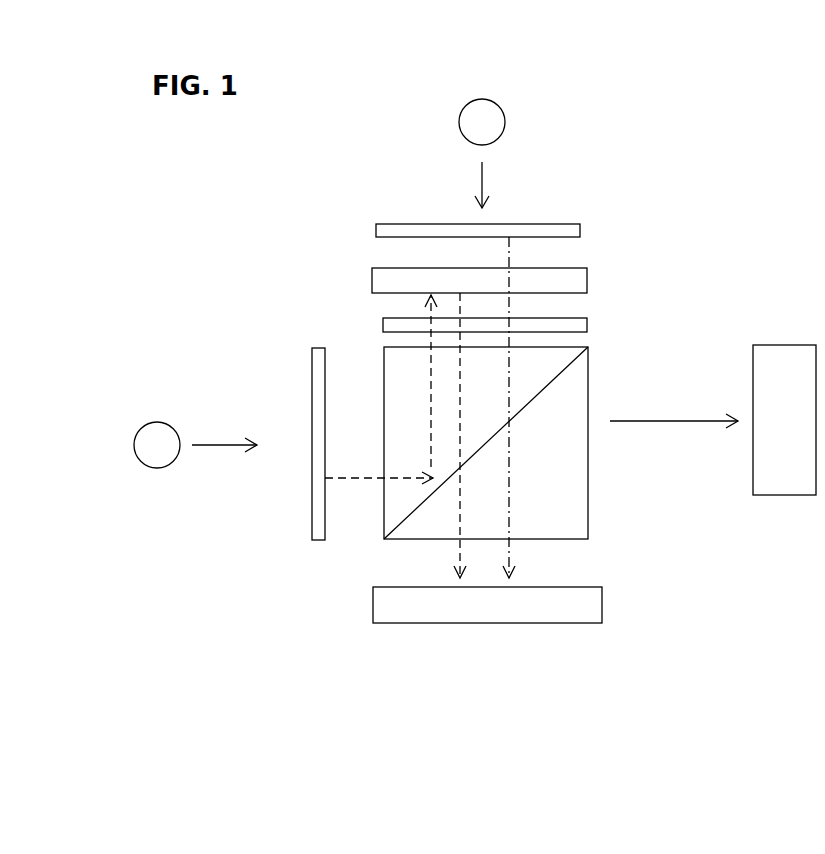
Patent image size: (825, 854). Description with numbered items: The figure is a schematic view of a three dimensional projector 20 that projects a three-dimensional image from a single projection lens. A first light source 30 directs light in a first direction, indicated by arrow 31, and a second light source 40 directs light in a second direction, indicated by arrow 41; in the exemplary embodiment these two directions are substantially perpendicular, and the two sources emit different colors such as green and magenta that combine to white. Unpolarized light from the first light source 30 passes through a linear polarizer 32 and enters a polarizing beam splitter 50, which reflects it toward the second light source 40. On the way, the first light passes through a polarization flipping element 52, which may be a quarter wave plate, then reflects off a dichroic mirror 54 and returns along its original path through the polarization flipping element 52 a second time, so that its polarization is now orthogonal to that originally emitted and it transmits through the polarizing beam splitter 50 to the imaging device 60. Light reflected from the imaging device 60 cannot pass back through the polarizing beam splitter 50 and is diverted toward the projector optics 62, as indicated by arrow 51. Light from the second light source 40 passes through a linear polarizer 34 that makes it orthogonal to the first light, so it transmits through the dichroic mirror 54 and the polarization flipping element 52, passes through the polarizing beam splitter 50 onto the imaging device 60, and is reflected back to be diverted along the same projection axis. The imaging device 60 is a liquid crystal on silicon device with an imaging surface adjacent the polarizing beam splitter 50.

The three dimensional projector 20 is at (275, 245).
The first light source 30 is at (137, 422).
The arrow indicating first direction 31 is at (227, 448).
The linear polarizer 32 is at (318, 365).
The linear polarizer 34 is at (568, 222).
The second light source 40 is at (500, 104).
The arrow indicating second direction 41 is at (482, 184).
The polarizing beam splitter 50 is at (588, 442).
The arrow indicating diverted light 51 is at (632, 421).
The polarization flipping element 52 is at (587, 320).
The dichroic mirror 54 is at (587, 278).
The imaging device 60 is at (433, 616).
The projector optics 62 is at (784, 420).